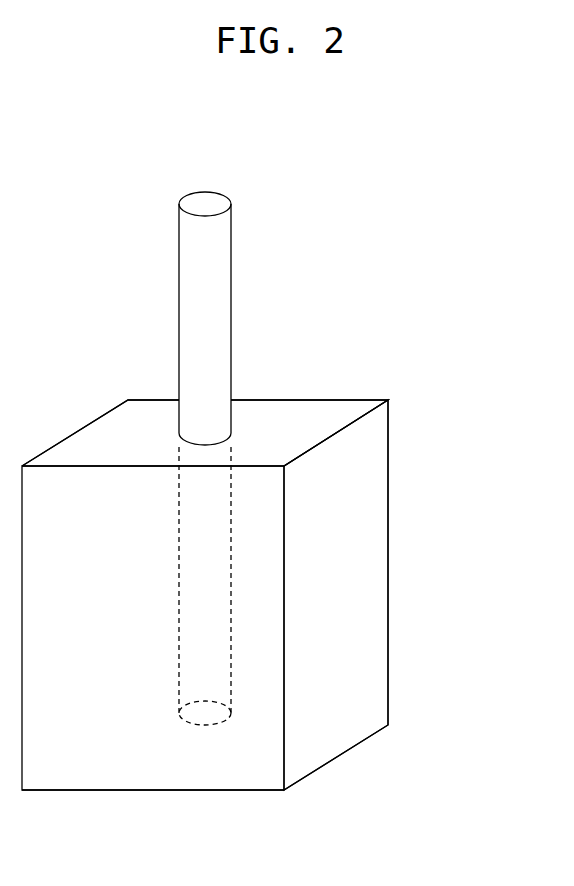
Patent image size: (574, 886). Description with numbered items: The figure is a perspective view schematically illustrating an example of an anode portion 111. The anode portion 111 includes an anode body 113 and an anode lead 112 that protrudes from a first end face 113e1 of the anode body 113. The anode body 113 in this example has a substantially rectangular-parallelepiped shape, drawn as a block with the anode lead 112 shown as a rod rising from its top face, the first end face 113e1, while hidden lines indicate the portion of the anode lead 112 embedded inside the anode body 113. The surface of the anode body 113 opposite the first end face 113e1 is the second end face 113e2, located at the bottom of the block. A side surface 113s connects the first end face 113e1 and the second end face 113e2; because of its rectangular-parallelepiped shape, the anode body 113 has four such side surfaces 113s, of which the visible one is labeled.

The anode portion 111 is at (67, 252).
The anode lead 112 is at (233, 310).
The anode body 113 is at (390, 557).
The first end face 113e1 is at (135, 412).
The second end face 113e2 is at (158, 792).
The side surface 113s is at (363, 633).